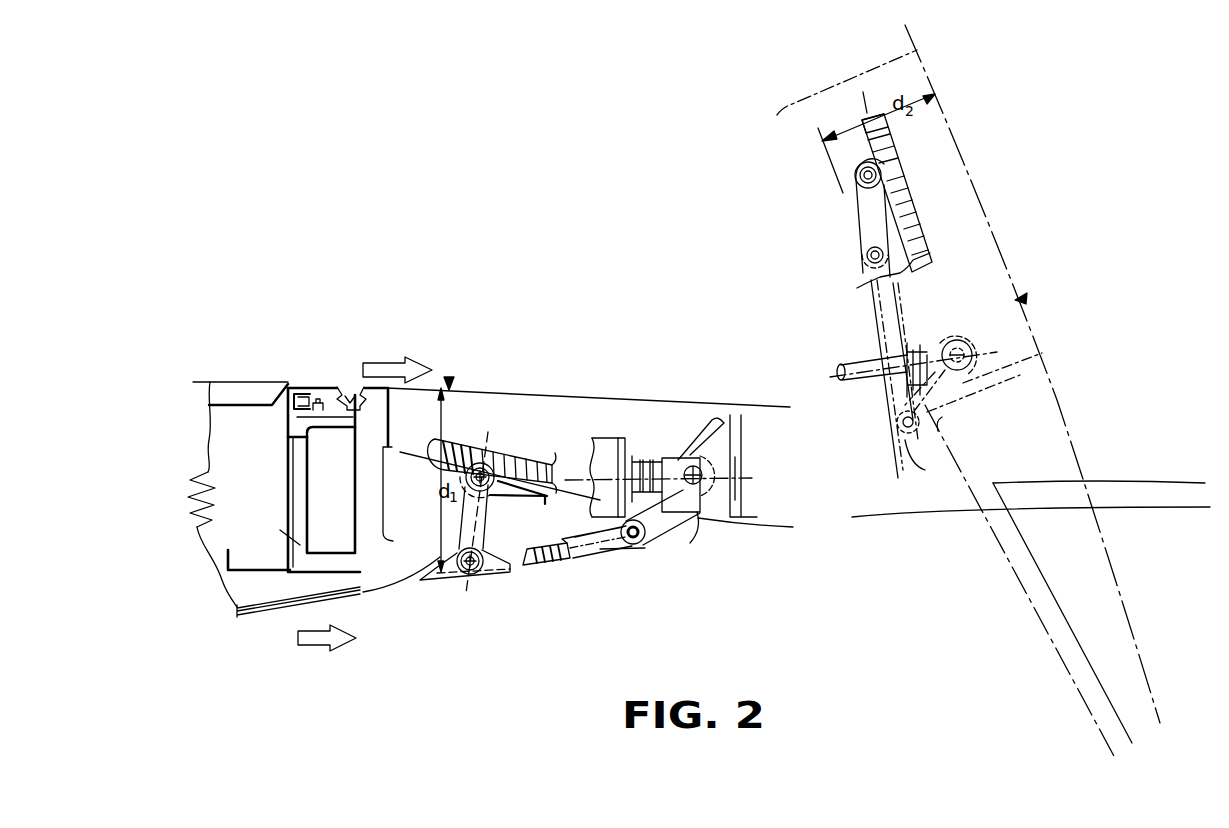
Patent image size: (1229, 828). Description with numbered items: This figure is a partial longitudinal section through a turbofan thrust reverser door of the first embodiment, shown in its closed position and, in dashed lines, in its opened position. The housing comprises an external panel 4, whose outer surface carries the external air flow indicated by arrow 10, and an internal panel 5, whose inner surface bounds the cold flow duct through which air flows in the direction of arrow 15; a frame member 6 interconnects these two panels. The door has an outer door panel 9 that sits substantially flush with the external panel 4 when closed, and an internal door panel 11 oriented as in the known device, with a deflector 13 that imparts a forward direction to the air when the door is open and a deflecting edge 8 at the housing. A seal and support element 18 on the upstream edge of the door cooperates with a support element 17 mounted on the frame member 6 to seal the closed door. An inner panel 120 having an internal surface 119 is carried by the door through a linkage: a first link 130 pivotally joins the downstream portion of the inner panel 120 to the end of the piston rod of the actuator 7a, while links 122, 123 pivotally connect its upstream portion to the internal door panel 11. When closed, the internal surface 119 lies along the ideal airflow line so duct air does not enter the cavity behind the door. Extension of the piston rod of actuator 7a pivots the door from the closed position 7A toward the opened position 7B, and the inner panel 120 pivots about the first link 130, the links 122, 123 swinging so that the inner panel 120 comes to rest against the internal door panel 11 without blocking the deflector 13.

The external housing panel 4 is at (210, 385).
The internal housing panel 5 is at (258, 592).
The frame member 6 is at (300, 545).
The stowed position of cowl 7A is at (451, 380).
The deployed position of cowl 7B is at (1024, 298).
The actuator cylinder 7a is at (609, 458).
The deflecting edge 8 is at (334, 490).
The outer door panel 9 is at (527, 388).
The external air flow arrow 10 is at (392, 362).
The internal door panel 11 is at (930, 200).
The deflector 13 is at (385, 503).
The cold flow duct air flow arrow 15 is at (323, 632).
The support element 17 is at (343, 405).
The seal and support element 18 is at (353, 390).
The internal surface 119 is at (513, 566).
The inner panel 120 is at (555, 568).
The link 122 is at (478, 518).
The link 123 is at (622, 414).
The first link 130 is at (648, 513).